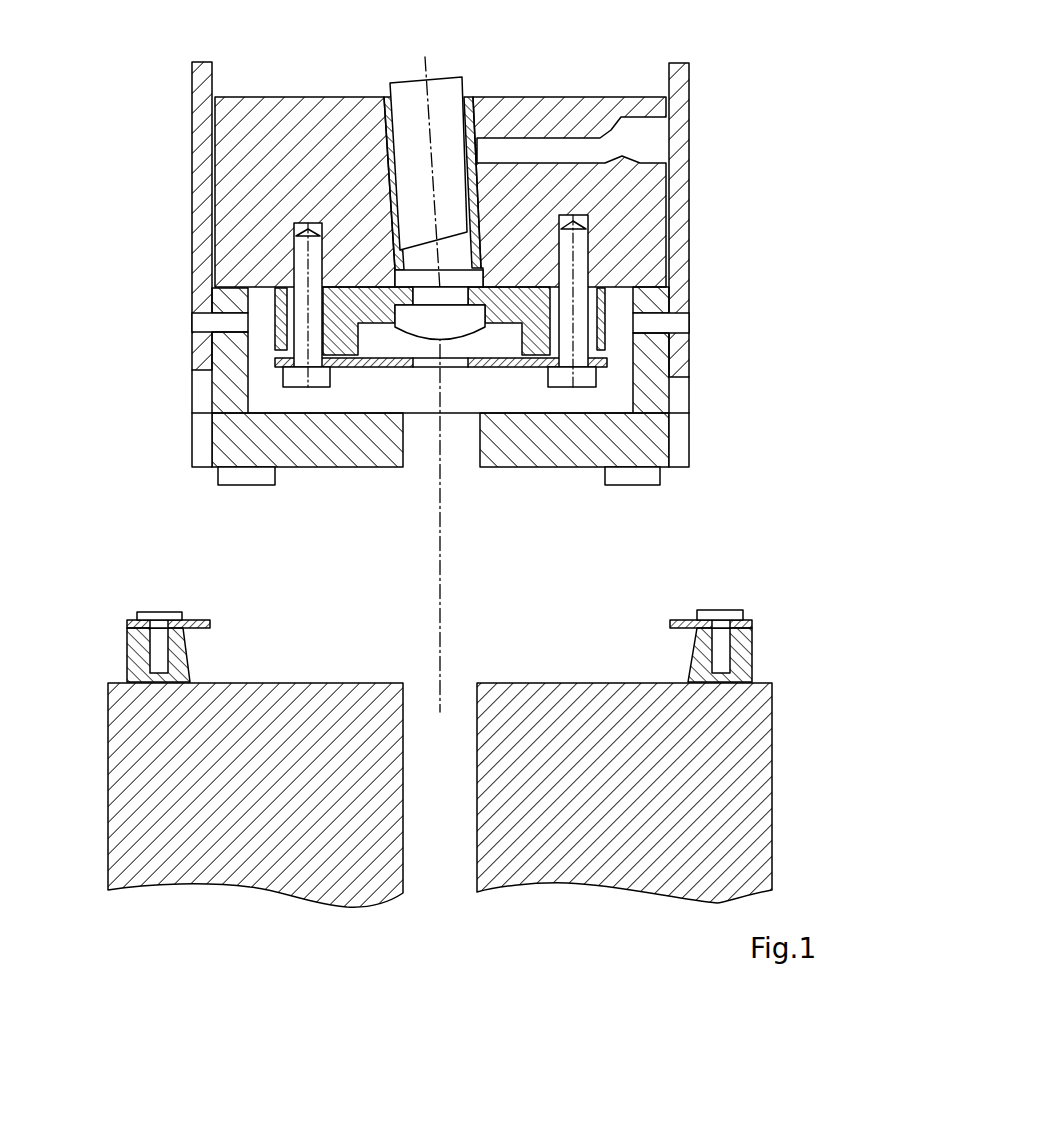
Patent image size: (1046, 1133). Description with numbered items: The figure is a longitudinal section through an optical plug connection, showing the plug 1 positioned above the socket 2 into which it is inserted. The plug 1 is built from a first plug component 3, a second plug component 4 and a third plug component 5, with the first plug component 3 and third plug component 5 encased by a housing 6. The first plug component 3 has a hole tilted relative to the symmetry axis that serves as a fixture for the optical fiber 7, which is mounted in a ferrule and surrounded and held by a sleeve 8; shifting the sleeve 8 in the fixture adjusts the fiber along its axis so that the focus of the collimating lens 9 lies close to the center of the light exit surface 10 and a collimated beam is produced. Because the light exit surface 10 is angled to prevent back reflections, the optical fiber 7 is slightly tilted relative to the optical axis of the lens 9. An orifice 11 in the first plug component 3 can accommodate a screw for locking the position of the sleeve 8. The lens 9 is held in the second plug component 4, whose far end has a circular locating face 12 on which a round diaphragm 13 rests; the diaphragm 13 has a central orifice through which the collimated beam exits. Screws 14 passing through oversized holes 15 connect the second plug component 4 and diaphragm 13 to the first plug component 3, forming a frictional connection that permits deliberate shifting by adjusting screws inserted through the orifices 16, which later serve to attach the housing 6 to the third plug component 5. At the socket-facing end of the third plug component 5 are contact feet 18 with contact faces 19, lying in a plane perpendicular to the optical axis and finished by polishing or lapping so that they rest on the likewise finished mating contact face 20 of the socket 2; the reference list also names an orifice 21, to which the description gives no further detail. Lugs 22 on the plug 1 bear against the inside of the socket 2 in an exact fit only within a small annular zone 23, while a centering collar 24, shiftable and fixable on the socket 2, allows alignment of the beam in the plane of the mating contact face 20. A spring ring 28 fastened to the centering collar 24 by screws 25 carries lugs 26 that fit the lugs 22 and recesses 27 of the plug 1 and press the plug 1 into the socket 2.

The plug 1 is at (178, 130).
The socket 2 is at (443, 790).
The first plug component 3 is at (297, 105).
The second plug component 4 is at (648, 280).
The third plug component 5 is at (220, 377).
The housing 6 is at (689, 119).
The optical fiber 7 is at (428, 98).
The sleeve 8 is at (467, 97).
The lens 9 is at (473, 331).
The light exit surface 10 is at (418, 247).
The orifice 11 is at (620, 133).
The locating face 12 is at (545, 378).
The diaphragm 13 is at (213, 397).
The screw 14 is at (230, 289).
The hole 15 is at (207, 312).
The orifice 16 is at (223, 323).
The contact foot 18 is at (233, 475).
The contact face 19 is at (248, 490).
The mating contact face 20 is at (316, 683).
The table section 21 is at (461, 683).
The lug 22 is at (200, 450).
The annular zone 23 is at (193, 673).
The centering collar 24 is at (125, 674).
The screw 25 is at (142, 612).
The lug 26 is at (205, 618).
The recess 27 is at (200, 413).
The spring ring 28 is at (127, 625).